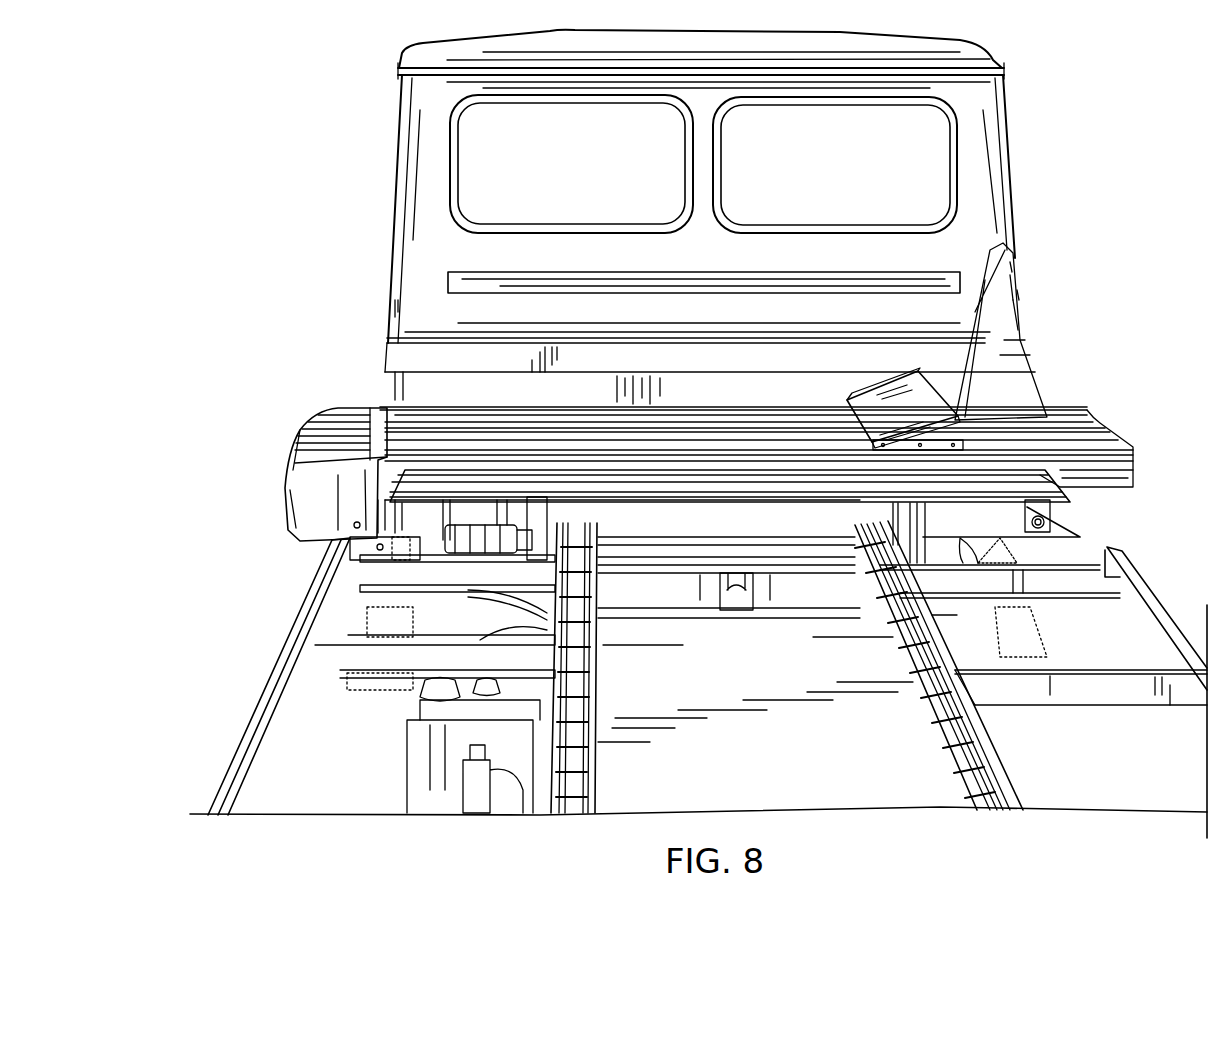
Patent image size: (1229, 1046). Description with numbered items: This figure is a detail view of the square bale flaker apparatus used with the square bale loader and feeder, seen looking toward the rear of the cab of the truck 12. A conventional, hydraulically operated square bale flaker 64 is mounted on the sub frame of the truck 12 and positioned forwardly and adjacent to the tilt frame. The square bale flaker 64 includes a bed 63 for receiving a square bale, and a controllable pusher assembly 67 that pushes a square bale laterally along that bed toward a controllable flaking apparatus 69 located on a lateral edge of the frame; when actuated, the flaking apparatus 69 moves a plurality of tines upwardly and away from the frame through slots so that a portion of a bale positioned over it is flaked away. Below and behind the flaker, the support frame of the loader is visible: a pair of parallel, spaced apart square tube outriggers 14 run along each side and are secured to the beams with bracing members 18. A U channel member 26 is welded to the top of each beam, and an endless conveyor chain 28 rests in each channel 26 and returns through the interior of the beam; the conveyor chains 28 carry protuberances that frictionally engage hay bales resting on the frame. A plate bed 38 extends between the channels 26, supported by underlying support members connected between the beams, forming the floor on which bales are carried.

The truck 12 is at (990, 136).
The square tube outriggers 14 is at (245, 735).
The bracing members 18 is at (1105, 695).
The U channel member 26 is at (595, 695).
The endless conveyor chain 28 is at (590, 780).
The plate bed 38 is at (766, 777).
The bed 63 is at (1082, 415).
The square bale flaker 64 is at (296, 452).
The pusher assembly 67 is at (1012, 250).
The flaking apparatus 69 is at (362, 412).